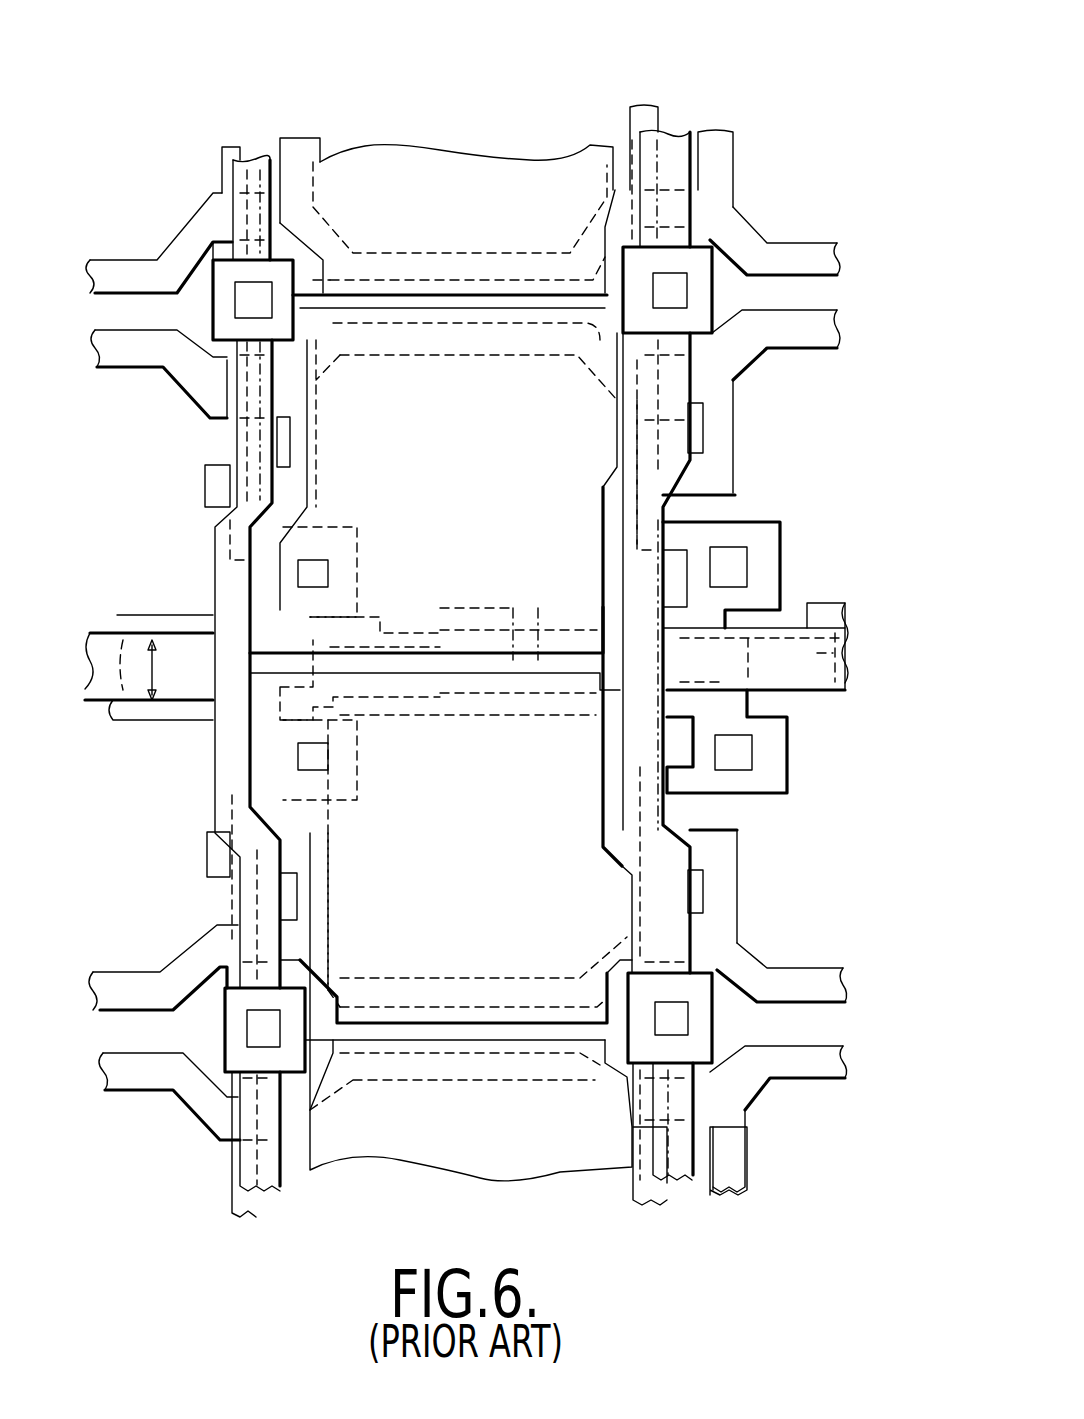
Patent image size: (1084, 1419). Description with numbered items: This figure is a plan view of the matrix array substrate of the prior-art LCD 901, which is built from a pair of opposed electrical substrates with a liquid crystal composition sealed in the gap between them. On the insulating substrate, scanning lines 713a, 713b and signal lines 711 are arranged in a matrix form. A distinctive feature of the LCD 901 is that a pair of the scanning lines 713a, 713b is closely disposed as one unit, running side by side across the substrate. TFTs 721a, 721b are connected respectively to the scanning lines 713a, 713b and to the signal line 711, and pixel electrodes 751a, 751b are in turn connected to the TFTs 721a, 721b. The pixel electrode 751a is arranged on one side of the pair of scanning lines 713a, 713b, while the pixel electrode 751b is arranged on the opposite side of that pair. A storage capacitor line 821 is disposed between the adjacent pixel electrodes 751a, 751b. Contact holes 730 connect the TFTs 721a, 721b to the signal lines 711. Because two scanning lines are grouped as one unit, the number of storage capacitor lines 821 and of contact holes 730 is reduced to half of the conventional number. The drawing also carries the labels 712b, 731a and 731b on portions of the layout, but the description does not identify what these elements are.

The signal line 711 is at (260, 173).
The scanning line 713a is at (807, 260).
The scanning line 713b is at (832, 327).
The contact hole 730 is at (668, 288).
The gate line connecting portion 712b is at (770, 367).
The TFT 721a is at (772, 820).
The TFT 721b is at (772, 1120).
The pixel electrode 751a is at (473, 180).
The pixel electrode 751b is at (357, 453).
The drain electrode 731a is at (813, 707).
The drain electrode connection 731b is at (543, 608).
The storage capacitor line 821 is at (893, 643).
The LCD 901 is at (717, 97).